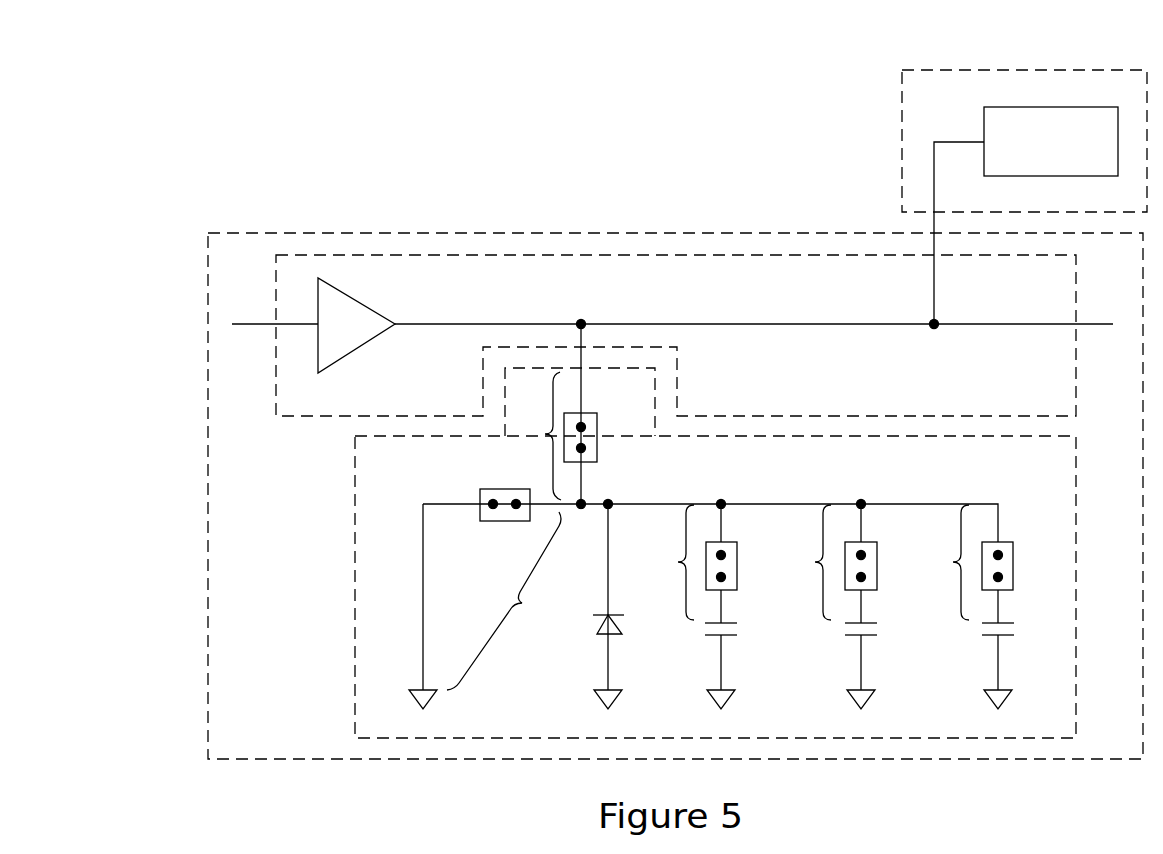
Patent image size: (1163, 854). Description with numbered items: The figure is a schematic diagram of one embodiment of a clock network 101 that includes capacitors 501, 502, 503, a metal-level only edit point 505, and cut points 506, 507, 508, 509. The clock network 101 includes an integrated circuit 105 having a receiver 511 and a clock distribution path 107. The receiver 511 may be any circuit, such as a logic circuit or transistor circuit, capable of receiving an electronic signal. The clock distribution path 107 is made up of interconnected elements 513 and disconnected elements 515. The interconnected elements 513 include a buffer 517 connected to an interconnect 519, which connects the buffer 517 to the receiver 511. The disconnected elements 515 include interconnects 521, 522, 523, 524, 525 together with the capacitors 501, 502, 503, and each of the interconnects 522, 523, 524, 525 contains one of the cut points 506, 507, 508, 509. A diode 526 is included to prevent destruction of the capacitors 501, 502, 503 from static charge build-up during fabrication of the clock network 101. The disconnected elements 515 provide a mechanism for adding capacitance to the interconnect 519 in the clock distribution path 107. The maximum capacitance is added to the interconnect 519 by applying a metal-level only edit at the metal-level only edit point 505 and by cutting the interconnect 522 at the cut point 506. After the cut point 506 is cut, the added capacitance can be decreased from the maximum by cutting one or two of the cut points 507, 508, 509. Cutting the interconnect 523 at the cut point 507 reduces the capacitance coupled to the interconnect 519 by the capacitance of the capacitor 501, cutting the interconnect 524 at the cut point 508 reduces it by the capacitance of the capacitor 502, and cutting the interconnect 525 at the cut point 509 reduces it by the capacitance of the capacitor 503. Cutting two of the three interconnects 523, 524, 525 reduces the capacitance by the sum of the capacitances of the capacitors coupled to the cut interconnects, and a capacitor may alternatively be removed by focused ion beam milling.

The clock network 101 is at (226, 113).
The integrated circuit 105 is at (1097, 70).
The receiver 511 is at (1049, 107).
The clock distribution path 107 is at (646, 233).
The interconnected elements 513 is at (1077, 352).
The buffer 517 is at (355, 300).
The interconnect 519 is at (755, 324).
The disconnected elements 515 is at (1077, 478).
The interconnect 521 is at (544, 434).
The metal-level only edit point 505 is at (598, 437).
The cut point 506 is at (505, 521).
The interconnect 522 is at (522, 603).
The diode 526 is at (619, 633).
The interconnect 523 is at (678, 562).
The cut point 507 is at (737, 578).
The capacitor 501 is at (730, 636).
The interconnect 524 is at (815, 562).
The cut point 508 is at (877, 578).
The capacitor 502 is at (870, 636).
The interconnect 525 is at (953, 562).
The cut point 509 is at (1014, 563).
The capacitor 503 is at (1006, 636).